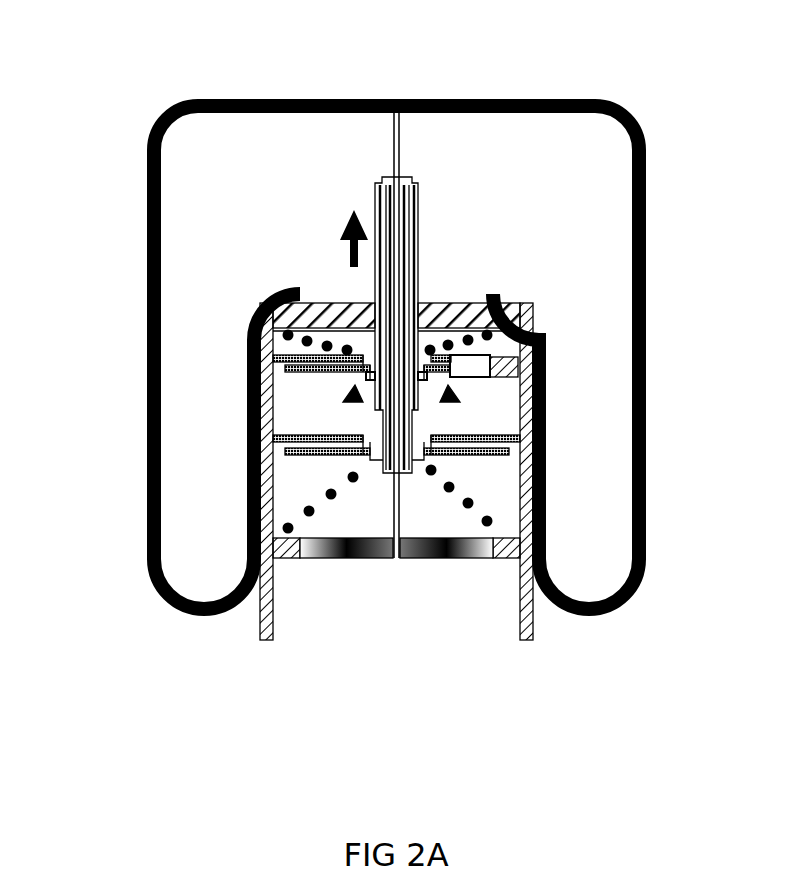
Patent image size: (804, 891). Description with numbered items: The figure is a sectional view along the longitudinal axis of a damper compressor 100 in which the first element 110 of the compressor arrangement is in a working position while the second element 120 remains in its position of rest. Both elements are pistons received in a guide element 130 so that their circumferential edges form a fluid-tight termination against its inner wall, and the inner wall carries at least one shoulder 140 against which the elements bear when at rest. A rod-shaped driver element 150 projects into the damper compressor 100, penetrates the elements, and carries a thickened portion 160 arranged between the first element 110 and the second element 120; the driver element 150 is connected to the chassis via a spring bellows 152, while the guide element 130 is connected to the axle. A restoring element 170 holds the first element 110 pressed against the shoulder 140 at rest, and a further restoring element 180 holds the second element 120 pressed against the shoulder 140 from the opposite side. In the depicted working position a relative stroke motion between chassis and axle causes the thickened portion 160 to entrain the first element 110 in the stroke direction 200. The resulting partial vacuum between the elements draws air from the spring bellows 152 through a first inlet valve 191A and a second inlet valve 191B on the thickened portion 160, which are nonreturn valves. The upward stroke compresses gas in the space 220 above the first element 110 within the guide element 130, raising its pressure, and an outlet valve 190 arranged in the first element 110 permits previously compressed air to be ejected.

The damper compressor 100 is at (150, 102).
The first element 110 is at (543, 323).
The second element 120 is at (548, 493).
The guide element 130 is at (433, 303).
The shoulder 140 is at (500, 458).
The driver element 150 is at (382, 462).
The spring bellows 152 is at (218, 181).
The thickened portion 160 is at (368, 362).
The restoring element 170 is at (250, 322).
The further restoring element 180 is at (305, 511).
The outlet valve 190 is at (492, 303).
The first inlet valve 191A is at (365, 381).
The second inlet valve 191B is at (428, 380).
The stroke direction 200 is at (363, 210).
The space 220 is at (247, 342).